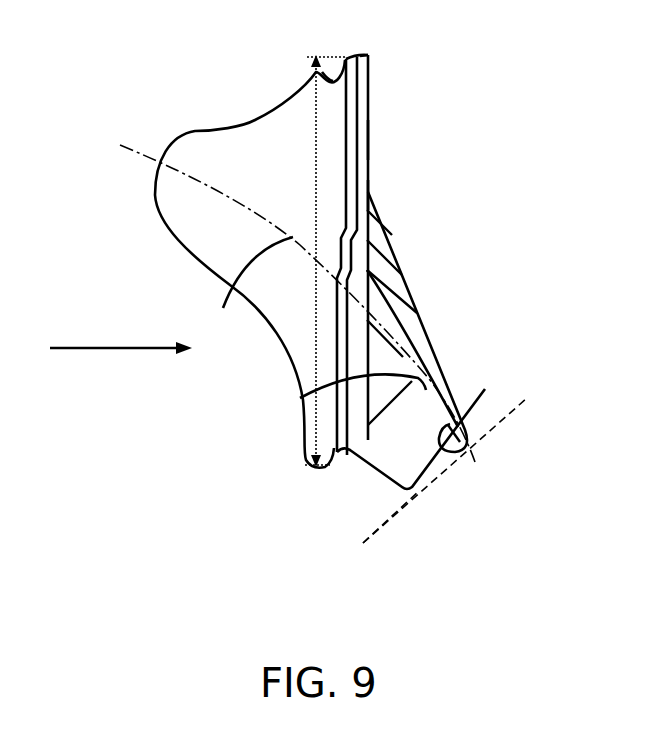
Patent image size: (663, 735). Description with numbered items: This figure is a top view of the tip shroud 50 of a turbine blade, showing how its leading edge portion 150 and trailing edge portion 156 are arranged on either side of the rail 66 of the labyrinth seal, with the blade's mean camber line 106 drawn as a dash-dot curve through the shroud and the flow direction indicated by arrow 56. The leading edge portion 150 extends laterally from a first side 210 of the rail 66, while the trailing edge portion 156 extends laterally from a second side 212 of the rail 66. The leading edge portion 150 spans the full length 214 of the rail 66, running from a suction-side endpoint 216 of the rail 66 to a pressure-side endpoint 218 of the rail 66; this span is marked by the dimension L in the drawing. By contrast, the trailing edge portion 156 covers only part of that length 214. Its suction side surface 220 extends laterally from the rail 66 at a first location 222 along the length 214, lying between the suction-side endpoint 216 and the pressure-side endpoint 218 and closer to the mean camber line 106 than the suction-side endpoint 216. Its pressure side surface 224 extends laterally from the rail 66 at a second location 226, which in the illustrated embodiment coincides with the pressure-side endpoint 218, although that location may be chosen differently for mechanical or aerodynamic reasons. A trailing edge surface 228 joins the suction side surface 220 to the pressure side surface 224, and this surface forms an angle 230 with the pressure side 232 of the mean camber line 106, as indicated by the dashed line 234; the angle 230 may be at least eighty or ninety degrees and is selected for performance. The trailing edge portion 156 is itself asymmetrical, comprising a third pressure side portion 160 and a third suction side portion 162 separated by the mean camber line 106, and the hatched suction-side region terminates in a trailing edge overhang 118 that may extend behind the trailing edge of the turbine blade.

The tip shroud 50 is at (251, 88).
The direction of insertion arrow 56 is at (113, 349).
The rail 66 is at (353, 113).
The mean camber line 106 is at (249, 291).
The trailing edge overhang 118 is at (482, 482).
The leading edge portion 150 is at (150, 240).
The trailing edge portion 156 is at (450, 485).
The third pressure side portion 160 is at (407, 490).
The third suction side portion 162 is at (395, 280).
The first side 210 is at (323, 71).
The second side 212 is at (368, 147).
The length 214 is at (303, 216).
The suction-side endpoint 216 is at (366, 56).
The pressure-side endpoint 218 is at (350, 460).
The suction side surface 220 is at (418, 313).
The first location 222 is at (368, 197).
The pressure side surface 224 is at (390, 450).
The second location 226 is at (350, 470).
The trailing edge surface 228 is at (396, 527).
The angle 230 is at (494, 405).
The pressure side 232 is at (329, 395).
The dashed line 234 is at (497, 420).
The blade length L is at (325, 261).